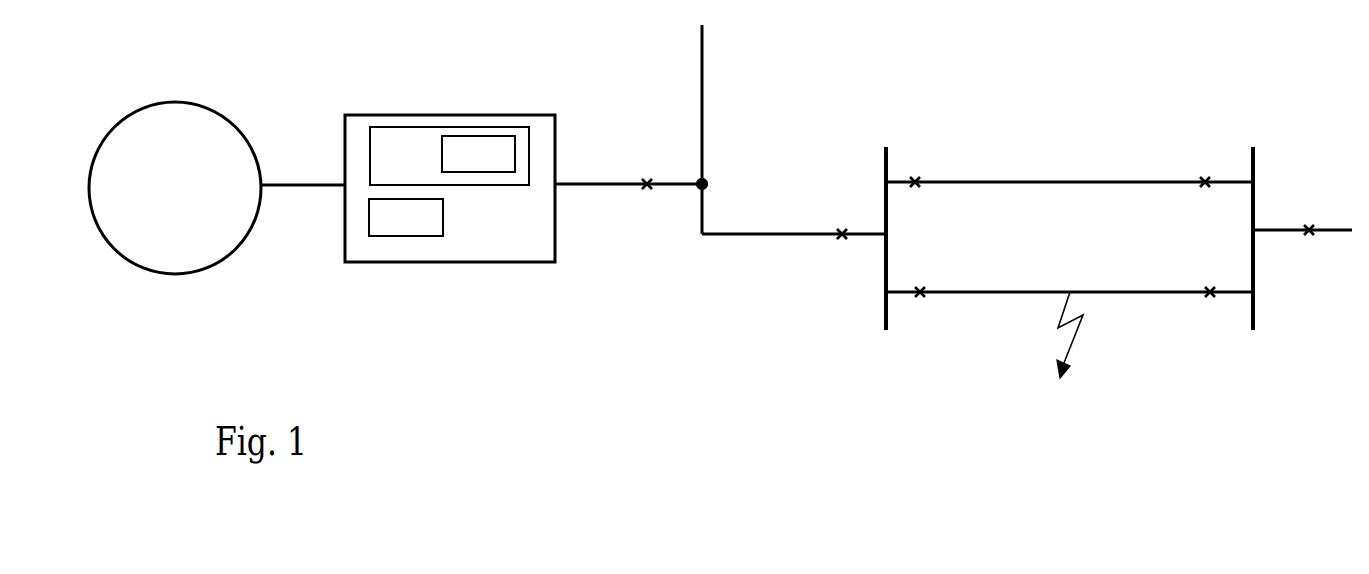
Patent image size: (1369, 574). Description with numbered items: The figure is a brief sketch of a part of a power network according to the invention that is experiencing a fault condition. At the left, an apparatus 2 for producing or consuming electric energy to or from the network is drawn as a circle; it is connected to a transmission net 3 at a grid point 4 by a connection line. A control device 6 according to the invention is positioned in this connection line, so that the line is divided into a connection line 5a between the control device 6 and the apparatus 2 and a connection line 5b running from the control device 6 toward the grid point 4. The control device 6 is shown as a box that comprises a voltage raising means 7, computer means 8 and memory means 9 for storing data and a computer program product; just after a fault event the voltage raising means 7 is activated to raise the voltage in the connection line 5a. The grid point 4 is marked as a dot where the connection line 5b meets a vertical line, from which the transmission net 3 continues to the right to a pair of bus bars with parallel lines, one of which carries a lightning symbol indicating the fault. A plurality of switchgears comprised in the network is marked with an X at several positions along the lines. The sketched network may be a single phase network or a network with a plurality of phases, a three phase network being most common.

The apparatus 2 is at (175, 273).
The transmission net 3 is at (755, 235).
The grid point 4 is at (705, 182).
The connection line 5a is at (315, 185).
The connection line 5b is at (579, 183).
The control device 6 is at (477, 263).
The voltage raising means 7 is at (395, 237).
The computer means 8 is at (407, 127).
The memory means 9 is at (473, 137).